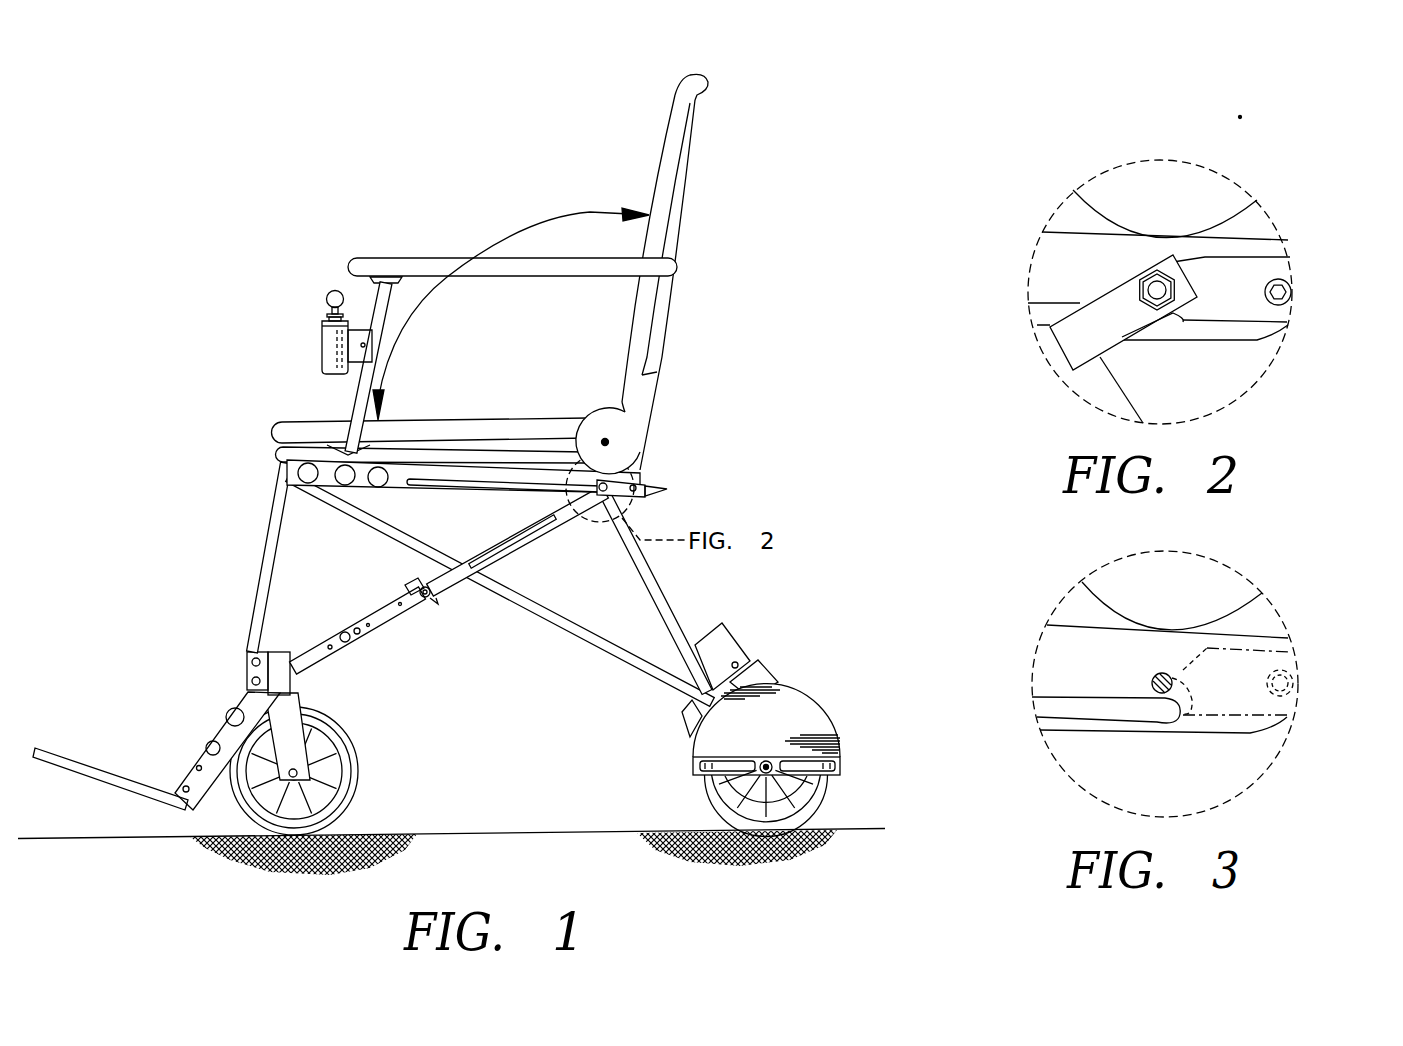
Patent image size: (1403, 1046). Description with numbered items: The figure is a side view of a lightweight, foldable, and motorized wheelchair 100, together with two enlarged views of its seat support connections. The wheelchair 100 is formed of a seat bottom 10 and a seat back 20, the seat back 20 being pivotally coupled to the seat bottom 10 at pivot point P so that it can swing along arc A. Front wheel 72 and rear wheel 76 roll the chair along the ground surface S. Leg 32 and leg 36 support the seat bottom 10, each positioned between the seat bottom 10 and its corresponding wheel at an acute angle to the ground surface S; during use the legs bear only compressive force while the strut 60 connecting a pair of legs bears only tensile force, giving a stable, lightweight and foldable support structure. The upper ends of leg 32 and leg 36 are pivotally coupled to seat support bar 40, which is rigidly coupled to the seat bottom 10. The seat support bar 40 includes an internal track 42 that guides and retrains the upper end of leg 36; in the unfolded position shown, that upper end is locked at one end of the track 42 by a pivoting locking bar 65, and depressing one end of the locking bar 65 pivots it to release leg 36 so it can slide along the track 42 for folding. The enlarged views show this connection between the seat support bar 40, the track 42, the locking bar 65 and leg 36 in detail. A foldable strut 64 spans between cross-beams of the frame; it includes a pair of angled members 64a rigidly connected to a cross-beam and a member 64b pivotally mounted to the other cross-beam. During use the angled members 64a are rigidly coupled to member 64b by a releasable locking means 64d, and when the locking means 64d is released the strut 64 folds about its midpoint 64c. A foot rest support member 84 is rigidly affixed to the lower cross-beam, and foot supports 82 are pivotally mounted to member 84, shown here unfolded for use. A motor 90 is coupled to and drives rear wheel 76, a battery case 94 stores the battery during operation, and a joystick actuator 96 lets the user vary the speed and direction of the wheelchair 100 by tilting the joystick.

In FIG. 1, the wheelchair 100 is at (528, 157).
In FIG. 1, the seat bottom 10 is at (275, 432).
In FIG. 1, the seat back 20 is at (676, 203).
In FIG. 1, the leg 32 is at (263, 566).
In FIG. 1, the leg 36 is at (660, 603).
In FIG. 2, the leg 36 is at (1060, 350).
In FIG. 1, the seat support bar 40 is at (346, 490).
In FIG. 2, the seat support bar 40 is at (1270, 250).
In FIG. 3, the seat support bar 40 is at (1297, 663).
In FIG. 1, the internal track 42 is at (484, 489).
In FIG. 2, the internal track 42 is at (1040, 313).
In FIG. 3, the internal track 42 is at (1073, 708).
In FIG. 1, the strut 60 is at (585, 638).
In FIG. 1, the foldable strut 64 is at (449, 594).
In FIG. 1, the angled member 64a is at (382, 622).
In FIG. 1, the member 64b is at (513, 547).
In FIG. 1, the midpoint 64c is at (428, 600).
In FIG. 1, the releasable locking means 64d is at (412, 588).
In FIG. 1, the pivoting locking bar 65 is at (632, 483).
In FIG. 2, the pivoting locking bar 65 is at (1290, 270).
In FIG. 1, the front wheel 72 is at (355, 793).
In FIG. 1, the rear wheel 76 is at (818, 800).
In FIG. 1, the foot support 82 is at (68, 758).
In FIG. 1, the foot rest support member 84 is at (205, 745).
In FIG. 1, the motor 90 is at (762, 676).
In FIG. 1, the battery case 94 is at (722, 643).
In FIG. 1, the joystick actuator 96 is at (322, 340).
In FIG. 1, the arc A is at (522, 230).
In FIG. 1, the pivot point P is at (613, 443).
In FIG. 1, the ground surface S is at (565, 831).